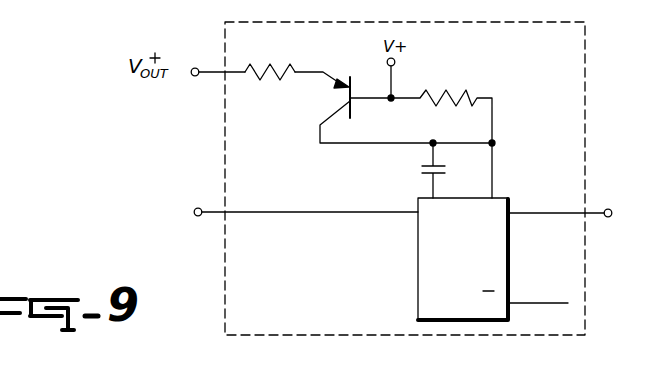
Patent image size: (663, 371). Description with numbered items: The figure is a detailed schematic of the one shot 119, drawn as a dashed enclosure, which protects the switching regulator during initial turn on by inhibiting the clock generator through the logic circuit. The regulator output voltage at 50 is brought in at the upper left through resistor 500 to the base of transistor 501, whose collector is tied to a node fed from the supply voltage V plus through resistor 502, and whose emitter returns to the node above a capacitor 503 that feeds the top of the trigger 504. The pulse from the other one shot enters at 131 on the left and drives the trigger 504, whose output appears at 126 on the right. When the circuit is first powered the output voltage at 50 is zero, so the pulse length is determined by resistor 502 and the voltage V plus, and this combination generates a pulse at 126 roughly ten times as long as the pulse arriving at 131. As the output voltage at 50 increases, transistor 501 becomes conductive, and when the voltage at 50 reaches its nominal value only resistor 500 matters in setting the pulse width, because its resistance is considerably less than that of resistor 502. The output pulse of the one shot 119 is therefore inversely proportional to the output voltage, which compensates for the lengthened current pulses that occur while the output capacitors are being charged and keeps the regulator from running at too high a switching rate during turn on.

The output voltage terminal 50 is at (194, 76).
The resistor 500 is at (250, 80).
The transistor 501 is at (346, 98).
The resistor 502 is at (438, 95).
The capacitor 503 is at (421, 177).
The trigger 504 is at (418, 283).
The one shot 119 is at (225, 148).
The one shot 118 pulse input 131 is at (199, 216).
The one shot output 126 is at (628, 203).